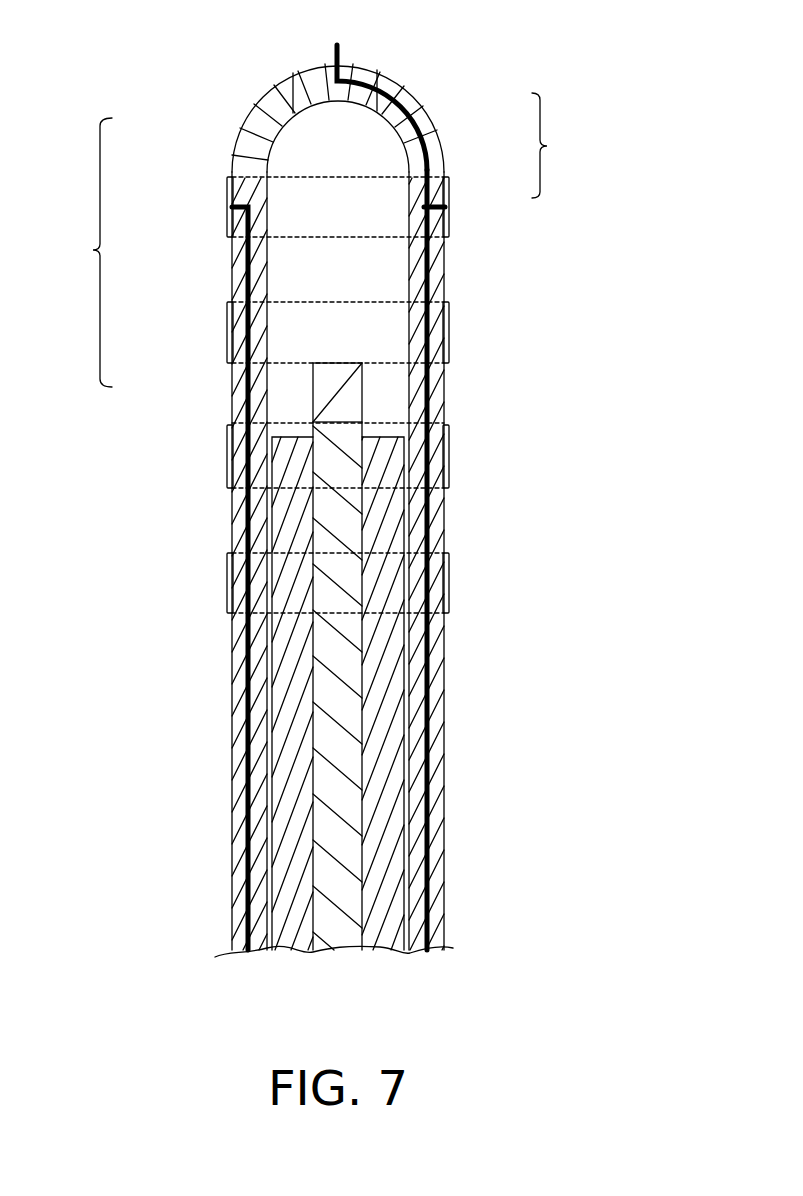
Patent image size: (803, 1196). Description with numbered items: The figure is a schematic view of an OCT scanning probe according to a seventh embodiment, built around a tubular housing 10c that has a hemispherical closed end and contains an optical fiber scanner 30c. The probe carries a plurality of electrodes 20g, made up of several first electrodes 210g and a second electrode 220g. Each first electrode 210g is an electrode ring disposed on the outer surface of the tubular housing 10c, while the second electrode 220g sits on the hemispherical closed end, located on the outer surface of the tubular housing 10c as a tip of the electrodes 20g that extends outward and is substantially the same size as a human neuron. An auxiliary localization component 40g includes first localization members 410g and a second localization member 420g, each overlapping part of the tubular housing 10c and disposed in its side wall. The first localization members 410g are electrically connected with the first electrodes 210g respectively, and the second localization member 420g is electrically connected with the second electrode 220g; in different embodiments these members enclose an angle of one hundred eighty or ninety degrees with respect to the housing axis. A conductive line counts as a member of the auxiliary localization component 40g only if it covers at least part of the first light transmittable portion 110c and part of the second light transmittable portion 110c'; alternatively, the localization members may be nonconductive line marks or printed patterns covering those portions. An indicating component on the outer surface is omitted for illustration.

The tubular housing 10c is at (252, 103).
The second light transmittable portion 110c' is at (350, 93).
The first light transmittable portion 110c is at (380, 560).
The second electrode 220g is at (340, 52).
The first electrodes 210g is at (448, 192).
The electrodes 20g is at (410, 332).
The second localization member 420g is at (415, 108).
The first localization members 410g is at (232, 387).
The auxiliary localization component 40g is at (248, 507).
The optical fiber scanner 30c is at (311, 417).